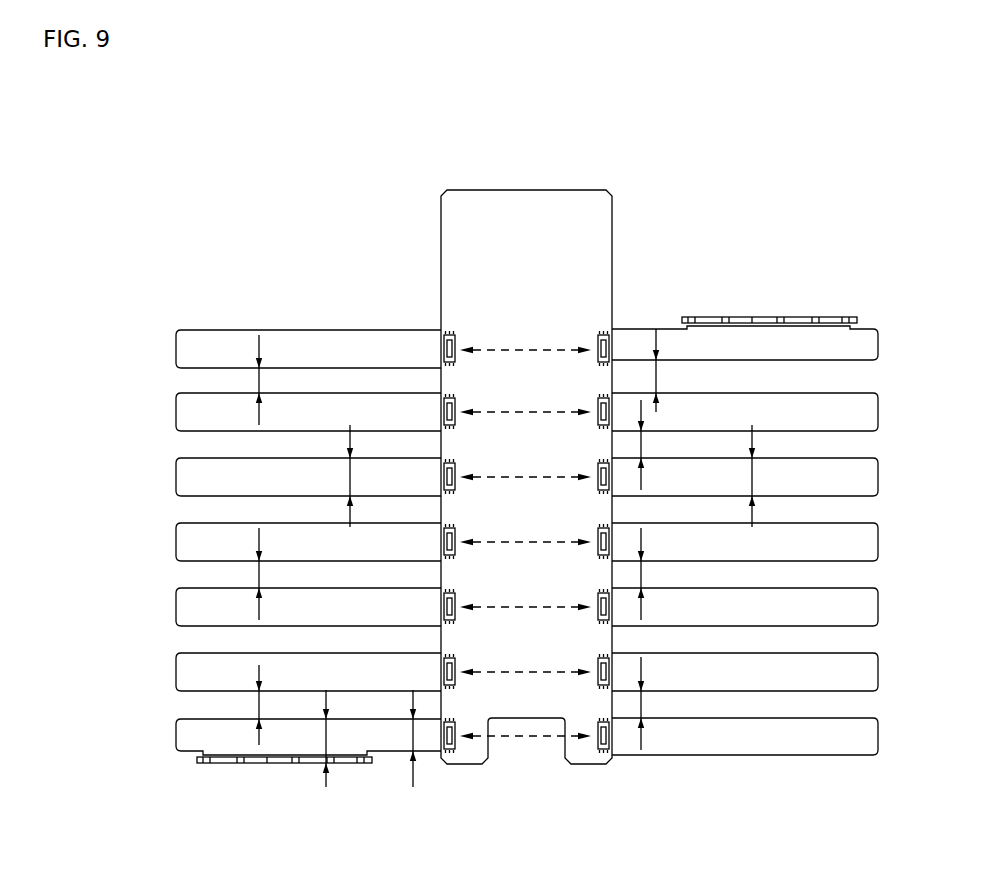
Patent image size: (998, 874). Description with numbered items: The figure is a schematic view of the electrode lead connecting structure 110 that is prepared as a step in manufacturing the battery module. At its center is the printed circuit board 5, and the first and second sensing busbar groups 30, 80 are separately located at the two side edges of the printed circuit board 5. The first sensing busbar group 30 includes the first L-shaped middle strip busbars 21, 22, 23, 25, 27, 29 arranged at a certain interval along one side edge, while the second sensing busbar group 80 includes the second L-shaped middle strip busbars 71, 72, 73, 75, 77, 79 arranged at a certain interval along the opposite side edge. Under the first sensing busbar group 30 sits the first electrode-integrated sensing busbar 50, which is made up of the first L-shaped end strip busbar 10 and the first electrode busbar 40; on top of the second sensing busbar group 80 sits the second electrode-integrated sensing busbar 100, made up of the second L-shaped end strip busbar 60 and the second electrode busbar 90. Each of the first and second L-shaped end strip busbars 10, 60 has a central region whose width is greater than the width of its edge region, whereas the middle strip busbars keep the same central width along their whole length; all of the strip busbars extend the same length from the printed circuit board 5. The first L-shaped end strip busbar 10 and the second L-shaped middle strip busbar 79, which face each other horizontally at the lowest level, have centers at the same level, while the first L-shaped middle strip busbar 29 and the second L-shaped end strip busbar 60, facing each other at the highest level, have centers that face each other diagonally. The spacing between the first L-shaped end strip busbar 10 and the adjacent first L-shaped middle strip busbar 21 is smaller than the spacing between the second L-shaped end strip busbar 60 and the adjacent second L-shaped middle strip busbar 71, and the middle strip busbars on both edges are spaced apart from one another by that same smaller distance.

The electrode lead connecting structure 110 is at (276, 128).
The printed circuit board 5 is at (528, 200).
The first sensing busbar group 30 is at (120, 340).
The first L-shaped middle strip busbar 29 is at (183, 350).
The first L-shaped middle strip busbar 27 is at (183, 413).
The first L-shaped middle strip busbar 25 is at (183, 478).
The first L-shaped middle strip busbar 23 is at (183, 543).
The first L-shaped middle strip busbar 22 is at (183, 608).
The first L-shaped middle strip busbar 21 is at (183, 673).
The first electrode-integrated sensing busbar 50 is at (238, 812).
The first L-shaped end strip busbar 10 is at (186, 742).
The first electrode busbar 40 is at (220, 764).
The second sensing busbar group 80 is at (933, 405).
The second L-shaped middle strip busbar 71 is at (879, 413).
The second L-shaped middle strip busbar 72 is at (879, 478).
The second L-shaped middle strip busbar 73 is at (879, 543).
The second L-shaped middle strip busbar 75 is at (879, 608).
The second L-shaped middle strip busbar 77 is at (879, 673).
The second L-shaped middle strip busbar 79 is at (879, 737).
The second electrode-integrated sensing busbar 100 is at (883, 270).
The second L-shaped end strip busbar 60 is at (866, 350).
The second electrode busbar 90 is at (825, 317).